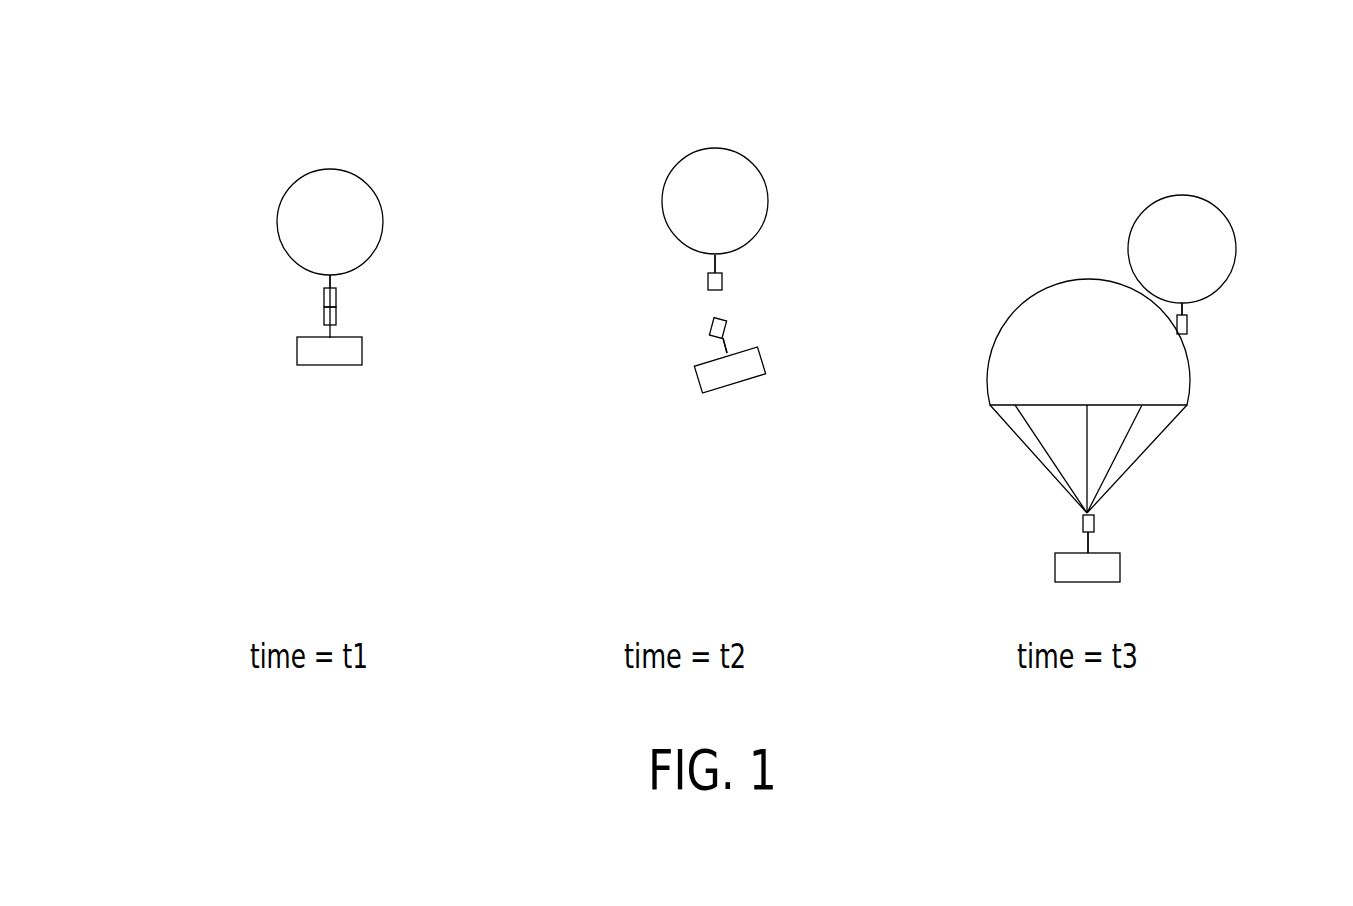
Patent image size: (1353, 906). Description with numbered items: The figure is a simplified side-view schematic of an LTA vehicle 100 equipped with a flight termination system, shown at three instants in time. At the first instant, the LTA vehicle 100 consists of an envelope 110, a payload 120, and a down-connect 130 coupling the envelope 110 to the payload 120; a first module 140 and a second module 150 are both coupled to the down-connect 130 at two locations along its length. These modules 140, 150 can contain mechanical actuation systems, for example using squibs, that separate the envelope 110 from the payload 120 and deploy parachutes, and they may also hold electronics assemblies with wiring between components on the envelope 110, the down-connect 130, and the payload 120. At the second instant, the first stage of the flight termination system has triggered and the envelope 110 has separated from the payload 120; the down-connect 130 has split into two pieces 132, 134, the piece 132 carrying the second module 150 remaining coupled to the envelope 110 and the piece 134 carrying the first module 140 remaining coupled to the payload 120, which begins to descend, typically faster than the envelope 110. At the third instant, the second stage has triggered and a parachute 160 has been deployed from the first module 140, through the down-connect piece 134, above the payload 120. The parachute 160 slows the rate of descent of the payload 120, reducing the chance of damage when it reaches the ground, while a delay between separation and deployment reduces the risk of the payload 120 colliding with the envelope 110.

The LTA vehicle 100 is at (370, 143).
The envelope 110 is at (293, 182).
The payload 120 is at (297, 353).
The down-connect 130 is at (330, 277).
The down-connect piece 132 is at (720, 270).
The down-connect piece 134 is at (708, 345).
The first module 140 is at (336, 317).
The second module 150 is at (336, 298).
The parachute 160 is at (1052, 335).